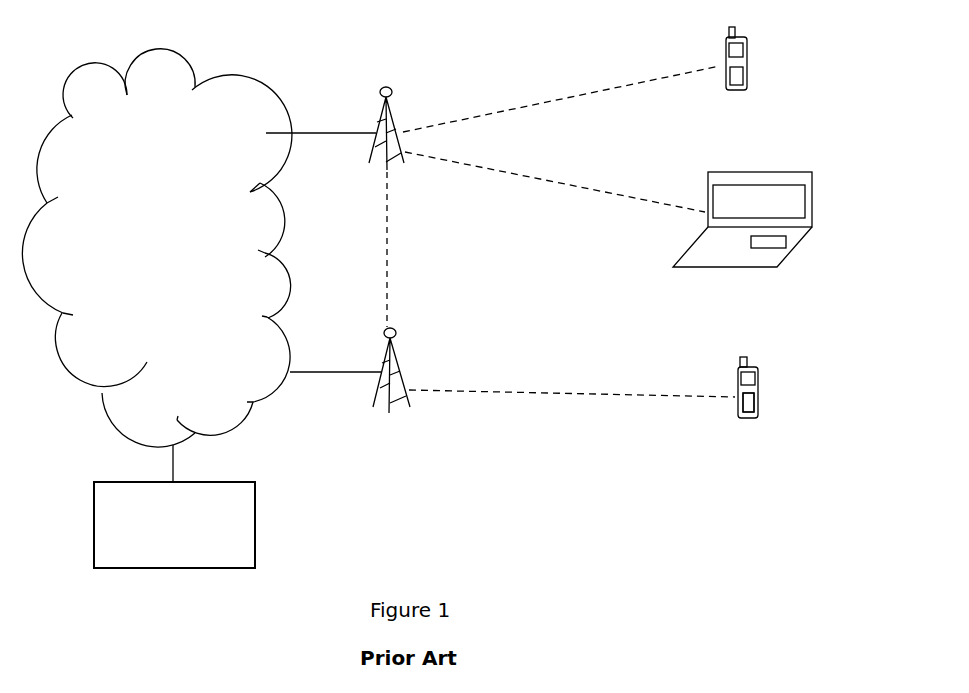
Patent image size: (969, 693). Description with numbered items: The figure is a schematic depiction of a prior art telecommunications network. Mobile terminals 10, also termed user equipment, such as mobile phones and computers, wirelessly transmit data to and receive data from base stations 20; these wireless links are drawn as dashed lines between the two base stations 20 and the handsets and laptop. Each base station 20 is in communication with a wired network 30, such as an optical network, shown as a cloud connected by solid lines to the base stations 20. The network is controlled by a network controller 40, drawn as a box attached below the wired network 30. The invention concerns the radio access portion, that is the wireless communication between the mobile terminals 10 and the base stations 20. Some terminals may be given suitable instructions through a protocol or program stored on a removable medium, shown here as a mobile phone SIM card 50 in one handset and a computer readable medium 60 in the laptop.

The mobile terminal 10 is at (747, 67).
The base station 20 is at (393, 112).
The wired network 30 is at (169, 264).
The network controller 40 is at (189, 539).
The mobile phone SIM card 50 is at (748, 400).
The computer readable medium 60 is at (778, 243).